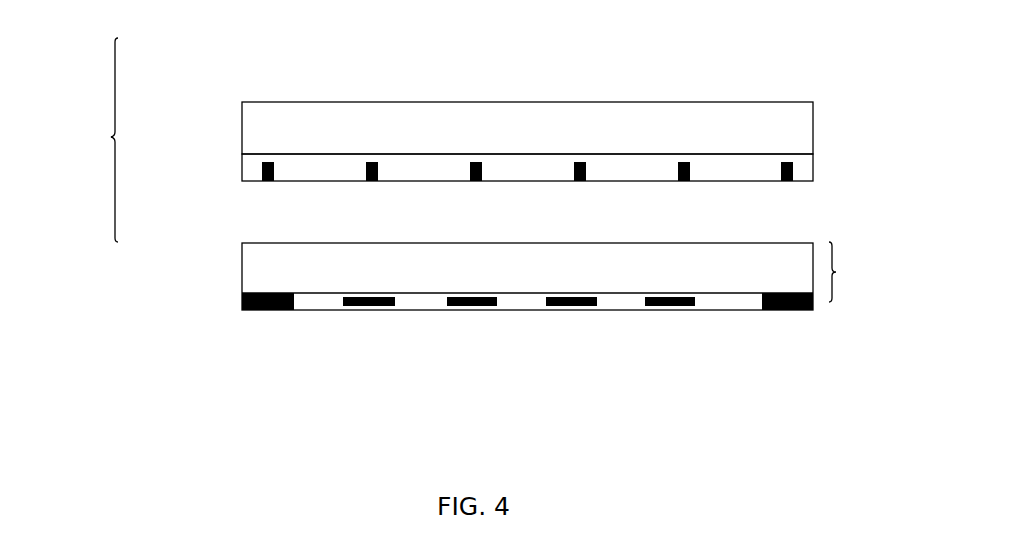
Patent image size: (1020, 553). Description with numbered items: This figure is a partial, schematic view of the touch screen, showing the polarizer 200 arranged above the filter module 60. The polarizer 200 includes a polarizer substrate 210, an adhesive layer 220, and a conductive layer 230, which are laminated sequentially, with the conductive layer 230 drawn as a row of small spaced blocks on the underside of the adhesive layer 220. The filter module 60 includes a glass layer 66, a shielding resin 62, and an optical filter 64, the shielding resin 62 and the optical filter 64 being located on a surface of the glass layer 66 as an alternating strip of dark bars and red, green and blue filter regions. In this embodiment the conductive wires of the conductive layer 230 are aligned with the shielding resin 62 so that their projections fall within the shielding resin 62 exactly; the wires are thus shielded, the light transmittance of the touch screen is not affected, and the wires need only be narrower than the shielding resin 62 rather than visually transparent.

The polarizer 200 is at (425, 143).
The polarizer substrate 210 is at (253, 127).
The adhesive layer 220 is at (252, 163).
The conductive layer 230 is at (269, 187).
The filter module 60 is at (568, 360).
The shielding resin 62 is at (353, 309).
The optical filter 64 is at (307, 309).
The glass layer 66 is at (580, 267).